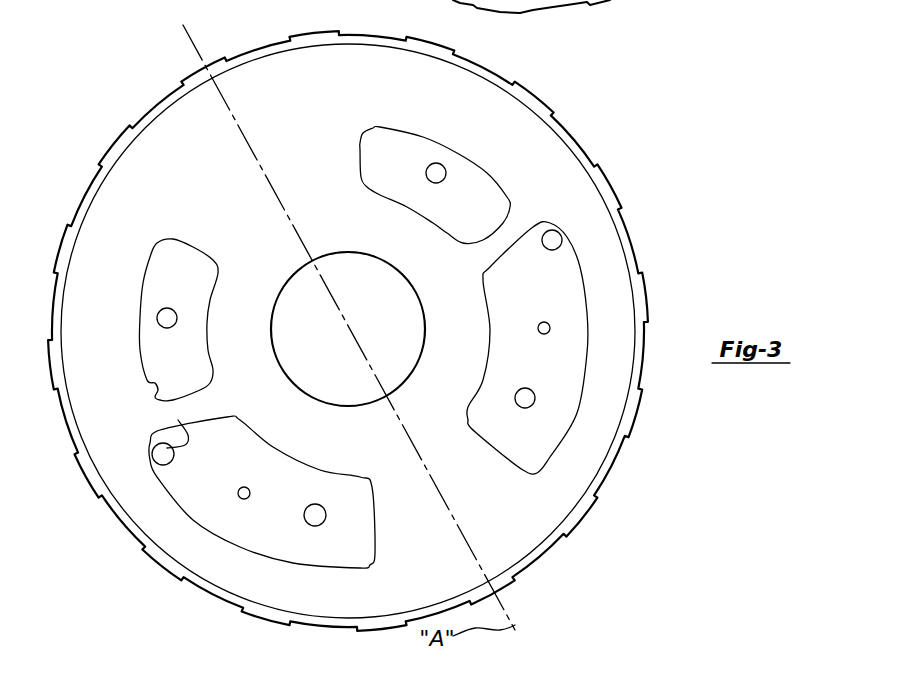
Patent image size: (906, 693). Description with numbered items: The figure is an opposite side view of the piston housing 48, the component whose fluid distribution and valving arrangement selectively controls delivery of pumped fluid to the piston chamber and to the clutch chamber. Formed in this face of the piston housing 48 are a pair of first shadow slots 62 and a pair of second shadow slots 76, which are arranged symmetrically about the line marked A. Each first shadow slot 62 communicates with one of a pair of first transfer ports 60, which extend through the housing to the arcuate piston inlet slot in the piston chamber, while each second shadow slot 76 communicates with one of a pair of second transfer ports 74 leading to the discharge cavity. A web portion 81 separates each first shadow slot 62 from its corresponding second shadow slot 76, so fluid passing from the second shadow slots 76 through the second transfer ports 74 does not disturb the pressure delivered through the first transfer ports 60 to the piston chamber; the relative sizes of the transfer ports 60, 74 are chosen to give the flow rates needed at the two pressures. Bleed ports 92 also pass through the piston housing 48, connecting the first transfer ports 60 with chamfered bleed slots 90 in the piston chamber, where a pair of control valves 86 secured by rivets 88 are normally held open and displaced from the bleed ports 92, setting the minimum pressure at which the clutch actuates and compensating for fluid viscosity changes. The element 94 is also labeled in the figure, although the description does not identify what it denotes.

The rotor disc 48 is at (613, 160).
The bolt hole 60 is at (533, 400).
The pocket 62 is at (583, 360).
The weight pocket 74 is at (166, 318).
The pocket wall 76 is at (398, 130).
The aperture 81 is at (503, 243).
The pilot hole 92 is at (550, 328).
The gear tooth 86 is at (520, 13).
The tooth gap 88 is at (577, 3).
The gear rim 90 is at (434, 0).
The gear 94 is at (406, 0).